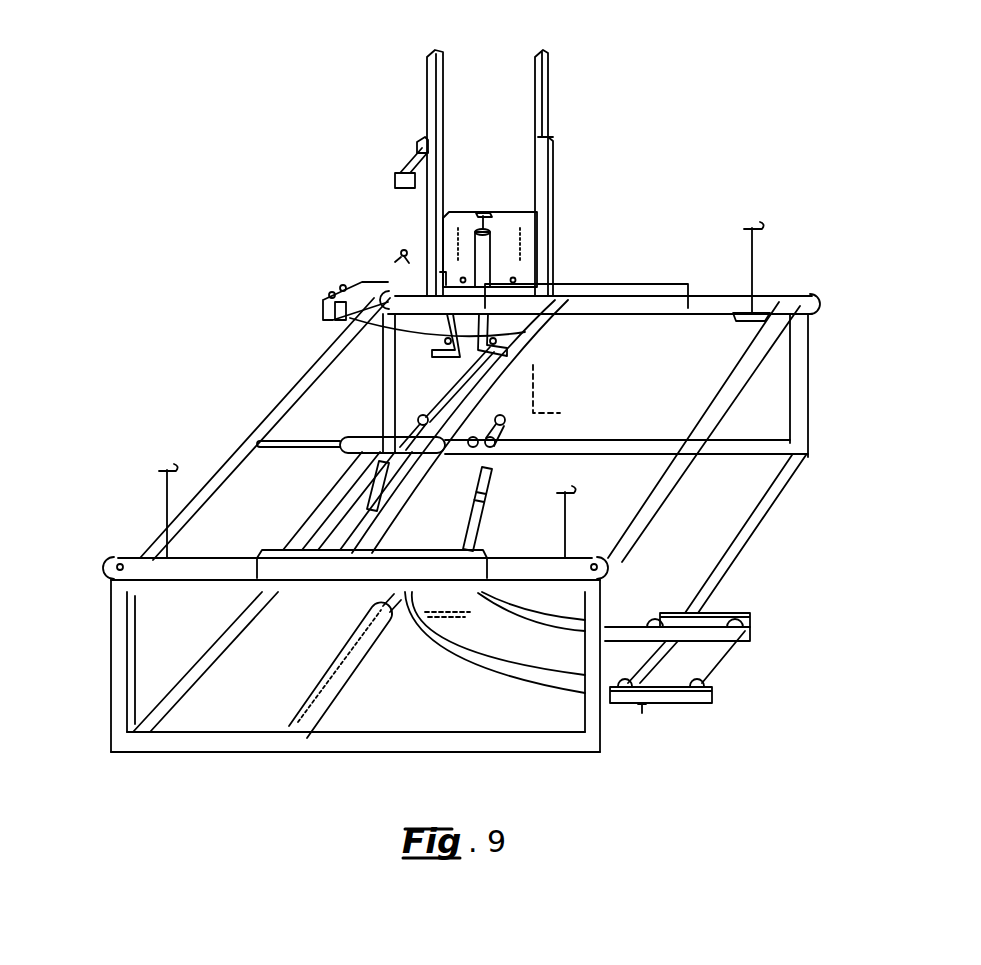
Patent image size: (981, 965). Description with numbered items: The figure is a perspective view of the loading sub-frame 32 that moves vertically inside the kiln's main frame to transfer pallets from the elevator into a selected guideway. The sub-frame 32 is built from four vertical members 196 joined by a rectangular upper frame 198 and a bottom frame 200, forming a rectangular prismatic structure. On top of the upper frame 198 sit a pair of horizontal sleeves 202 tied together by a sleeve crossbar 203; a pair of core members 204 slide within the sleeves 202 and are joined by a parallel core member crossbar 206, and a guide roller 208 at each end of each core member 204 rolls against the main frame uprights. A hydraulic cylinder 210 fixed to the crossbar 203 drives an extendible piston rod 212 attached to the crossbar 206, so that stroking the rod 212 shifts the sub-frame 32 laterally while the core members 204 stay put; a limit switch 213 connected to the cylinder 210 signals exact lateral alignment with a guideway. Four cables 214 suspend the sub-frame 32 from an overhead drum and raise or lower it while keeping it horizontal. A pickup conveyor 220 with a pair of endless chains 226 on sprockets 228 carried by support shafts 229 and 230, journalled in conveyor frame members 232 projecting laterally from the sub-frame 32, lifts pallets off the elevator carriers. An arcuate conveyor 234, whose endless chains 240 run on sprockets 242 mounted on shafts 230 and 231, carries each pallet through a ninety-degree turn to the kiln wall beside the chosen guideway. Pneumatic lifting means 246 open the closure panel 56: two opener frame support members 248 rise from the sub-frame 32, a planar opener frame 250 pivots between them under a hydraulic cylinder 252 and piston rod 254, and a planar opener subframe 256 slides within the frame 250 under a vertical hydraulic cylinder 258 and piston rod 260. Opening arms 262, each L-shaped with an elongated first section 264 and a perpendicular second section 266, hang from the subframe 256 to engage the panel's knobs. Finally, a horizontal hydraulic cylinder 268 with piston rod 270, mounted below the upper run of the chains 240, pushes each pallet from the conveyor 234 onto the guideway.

The infeed subframe 32 is at (217, 419).
The closure panel 56 is at (563, 397).
The vertical members 196 is at (108, 678).
The rectangular upper frame 198 is at (678, 478).
The bottom frame 200 is at (217, 749).
The horizontal sleeves 202 is at (330, 572).
The sleeve crossbar 203 is at (523, 375).
The core members 204 is at (521, 549).
The core member crossbar 206 is at (255, 447).
The guide roller 208 is at (107, 565).
The hydraulic cylinder 210 is at (362, 440).
The extendible piston rod 212 is at (292, 451).
The limit switch 213 is at (396, 262).
The cables 214 is at (165, 503).
The pickup conveyor 220 is at (643, 708).
The endless chains 226 is at (720, 618).
The sprockets 228 is at (745, 625).
The support shaft 229 is at (718, 657).
The support shaft 230 is at (641, 660).
The support shaft 231 is at (493, 448).
The conveyor frame members 232 is at (713, 708).
The arcuate conveyor 234 is at (447, 663).
The endless chains 240 is at (510, 653).
The sprockets 242 is at (653, 626).
The pneumatic lifting means 246 is at (566, 220).
The opener frame support members 248 is at (552, 166).
The planar opener frame 250 is at (549, 122).
The hydraulic cylinder 252 is at (398, 178).
The piston rod 254 is at (417, 149).
The planar opener subframe 256 is at (458, 211).
The hydraulic cylinder 258 is at (477, 250).
The piston rod 260 is at (478, 217).
The opening arms 262 is at (378, 323).
The first section 264 is at (523, 333).
The second section 266 is at (437, 357).
The hydraulic cylinder 268 is at (323, 683).
The piston rod 270 is at (393, 627).